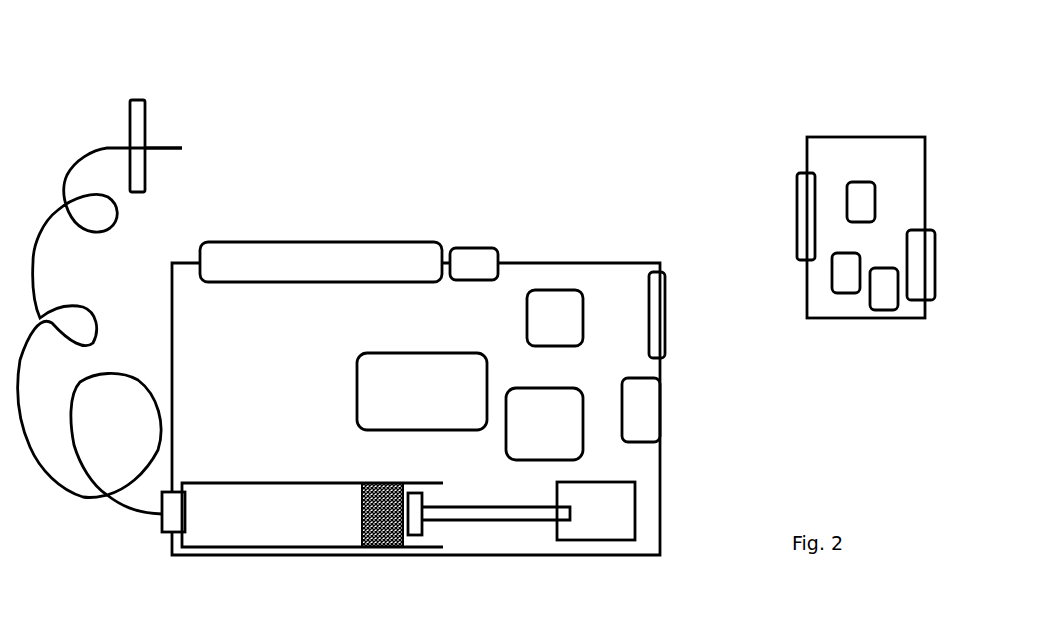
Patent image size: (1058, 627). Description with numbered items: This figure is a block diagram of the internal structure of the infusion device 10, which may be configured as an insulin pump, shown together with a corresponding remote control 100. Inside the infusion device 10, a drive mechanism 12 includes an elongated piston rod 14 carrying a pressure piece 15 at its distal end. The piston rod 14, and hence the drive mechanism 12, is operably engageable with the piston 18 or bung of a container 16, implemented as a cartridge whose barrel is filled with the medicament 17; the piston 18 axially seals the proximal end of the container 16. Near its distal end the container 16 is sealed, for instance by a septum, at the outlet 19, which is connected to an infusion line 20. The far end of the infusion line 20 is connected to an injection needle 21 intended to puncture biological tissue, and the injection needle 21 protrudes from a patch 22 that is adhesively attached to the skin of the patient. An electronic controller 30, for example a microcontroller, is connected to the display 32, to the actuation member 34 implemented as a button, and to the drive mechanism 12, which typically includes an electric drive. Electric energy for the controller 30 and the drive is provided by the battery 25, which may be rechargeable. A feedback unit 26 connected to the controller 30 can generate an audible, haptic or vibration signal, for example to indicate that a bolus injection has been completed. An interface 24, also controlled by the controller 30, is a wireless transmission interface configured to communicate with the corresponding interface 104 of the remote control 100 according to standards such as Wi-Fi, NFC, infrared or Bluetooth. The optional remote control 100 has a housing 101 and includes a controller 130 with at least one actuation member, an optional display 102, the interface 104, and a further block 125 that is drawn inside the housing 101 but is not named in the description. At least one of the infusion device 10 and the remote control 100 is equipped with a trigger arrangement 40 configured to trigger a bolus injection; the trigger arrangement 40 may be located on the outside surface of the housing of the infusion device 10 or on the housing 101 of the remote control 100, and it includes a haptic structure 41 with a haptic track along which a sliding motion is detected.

The infusion device 10 is at (441, 150).
The drive mechanism 12 is at (630, 522).
The piston rod 14 is at (493, 520).
The pressure piece 15 is at (417, 533).
The container 16 is at (312, 480).
The medicament 17 is at (263, 495).
The piston 18 is at (382, 547).
The outlet 19 is at (163, 537).
The infusion line 20 is at (126, 510).
The injection needle 21 is at (173, 148).
The patch 22 is at (130, 112).
The interface 24 is at (564, 297).
The battery 25 is at (573, 443).
The feedback unit 26 is at (660, 405).
The controller 30 is at (373, 381).
The display 32 is at (283, 248).
The actuation member 34 is at (476, 248).
The trigger arrangement 40 is at (677, 328).
The haptic structure 41 is at (683, 297).
The remote control 100 is at (871, 242).
The housing 101 is at (825, 320).
The display 102 is at (917, 300).
The interface 104 is at (860, 182).
The processor 125 is at (878, 310).
The controller 130 is at (850, 293).